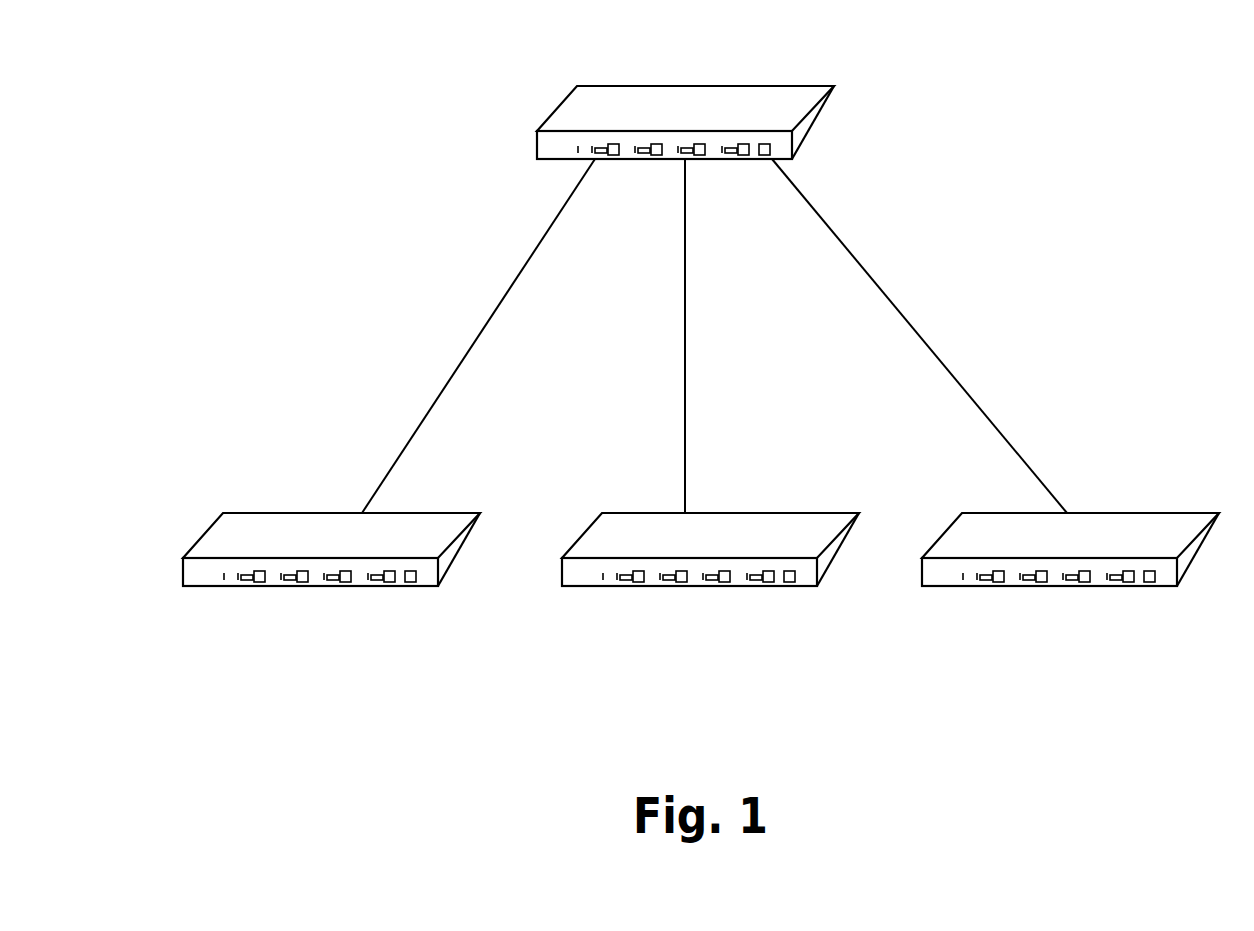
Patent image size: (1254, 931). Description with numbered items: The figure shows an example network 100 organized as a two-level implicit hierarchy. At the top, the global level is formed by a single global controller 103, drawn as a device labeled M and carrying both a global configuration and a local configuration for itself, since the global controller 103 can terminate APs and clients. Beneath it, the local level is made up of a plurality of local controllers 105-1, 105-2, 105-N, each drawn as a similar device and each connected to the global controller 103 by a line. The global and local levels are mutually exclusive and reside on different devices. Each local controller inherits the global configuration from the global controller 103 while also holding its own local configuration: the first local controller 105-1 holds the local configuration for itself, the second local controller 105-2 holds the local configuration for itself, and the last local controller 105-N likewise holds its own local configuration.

The network 100 is at (336, 163).
The global controller 103 is at (808, 136).
The local controller 105-1 is at (310, 512).
The local controller 105-2 is at (763, 512).
The local controller 105-N is at (1108, 512).